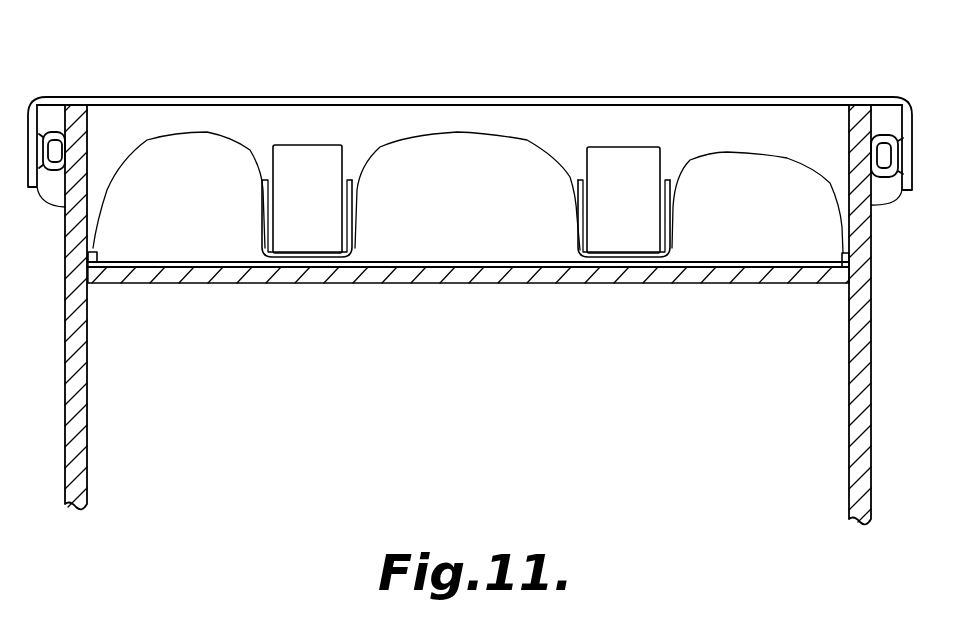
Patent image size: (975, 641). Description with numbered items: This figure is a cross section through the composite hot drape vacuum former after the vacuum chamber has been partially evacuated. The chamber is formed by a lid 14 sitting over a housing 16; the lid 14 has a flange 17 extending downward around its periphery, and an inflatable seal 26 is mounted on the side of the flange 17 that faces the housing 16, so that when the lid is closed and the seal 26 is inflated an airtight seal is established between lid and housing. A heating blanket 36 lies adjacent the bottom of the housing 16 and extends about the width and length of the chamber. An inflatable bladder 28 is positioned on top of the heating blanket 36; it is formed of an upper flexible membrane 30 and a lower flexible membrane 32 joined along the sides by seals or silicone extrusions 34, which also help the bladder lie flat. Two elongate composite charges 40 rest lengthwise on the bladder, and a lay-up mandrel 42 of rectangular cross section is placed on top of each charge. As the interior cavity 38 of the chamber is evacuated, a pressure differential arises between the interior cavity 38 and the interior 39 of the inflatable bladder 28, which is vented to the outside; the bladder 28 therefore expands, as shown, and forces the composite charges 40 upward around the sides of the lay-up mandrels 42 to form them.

The lid 14 is at (407, 97).
The housing 16 is at (240, 283).
The flange 17 is at (88, 206).
The inflatable seal 26 is at (57, 133).
The inflatable bladder 28 is at (150, 125).
The upper flexible membrane 30 is at (480, 133).
The lower flexible membrane 32 is at (503, 263).
The silicone extrusions 34 is at (88, 283).
The heating blanket 36 is at (422, 268).
The interior cavity 38 is at (697, 125).
The interior of the inflatable bladder 39 is at (750, 247).
The composite charges 40 is at (352, 242).
The lay-up mandrel 42 is at (320, 146).